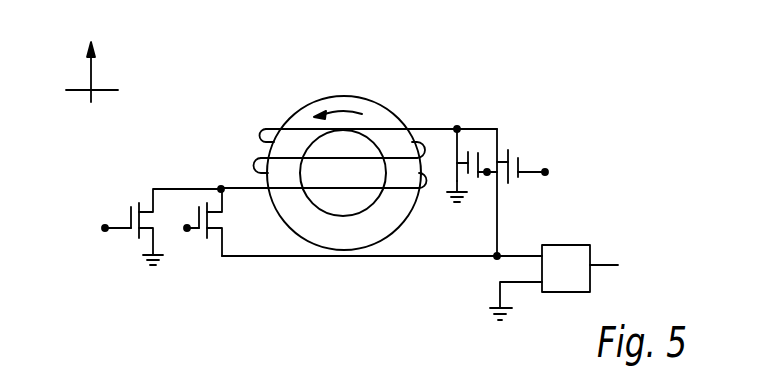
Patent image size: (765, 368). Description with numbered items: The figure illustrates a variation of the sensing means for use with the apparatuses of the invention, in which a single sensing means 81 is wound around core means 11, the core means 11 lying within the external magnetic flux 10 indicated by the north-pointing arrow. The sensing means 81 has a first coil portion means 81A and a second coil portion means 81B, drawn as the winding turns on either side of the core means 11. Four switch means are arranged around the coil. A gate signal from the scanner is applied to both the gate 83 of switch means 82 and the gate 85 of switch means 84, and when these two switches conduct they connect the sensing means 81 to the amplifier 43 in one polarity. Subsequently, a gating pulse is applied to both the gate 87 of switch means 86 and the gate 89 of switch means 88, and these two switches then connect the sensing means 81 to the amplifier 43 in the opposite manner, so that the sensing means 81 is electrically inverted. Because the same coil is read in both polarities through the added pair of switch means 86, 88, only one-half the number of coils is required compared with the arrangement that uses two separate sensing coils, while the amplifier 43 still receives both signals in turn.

The external magnetic flux 10 is at (89, 72).
The core means 11 is at (371, 107).
The sensing means 81 is at (418, 127).
The first coil portion means 81A is at (428, 191).
The second coil portion means 81B is at (262, 128).
The switch means 82 is at (510, 150).
The gate 83 is at (548, 170).
The switch means 84 is at (139, 204).
The gate 85 is at (104, 226).
The switch means 86 is at (218, 212).
The gate 87 is at (187, 231).
The switch means 88 is at (477, 180).
The gate 89 is at (488, 177).
The amplifier 43 is at (571, 245).